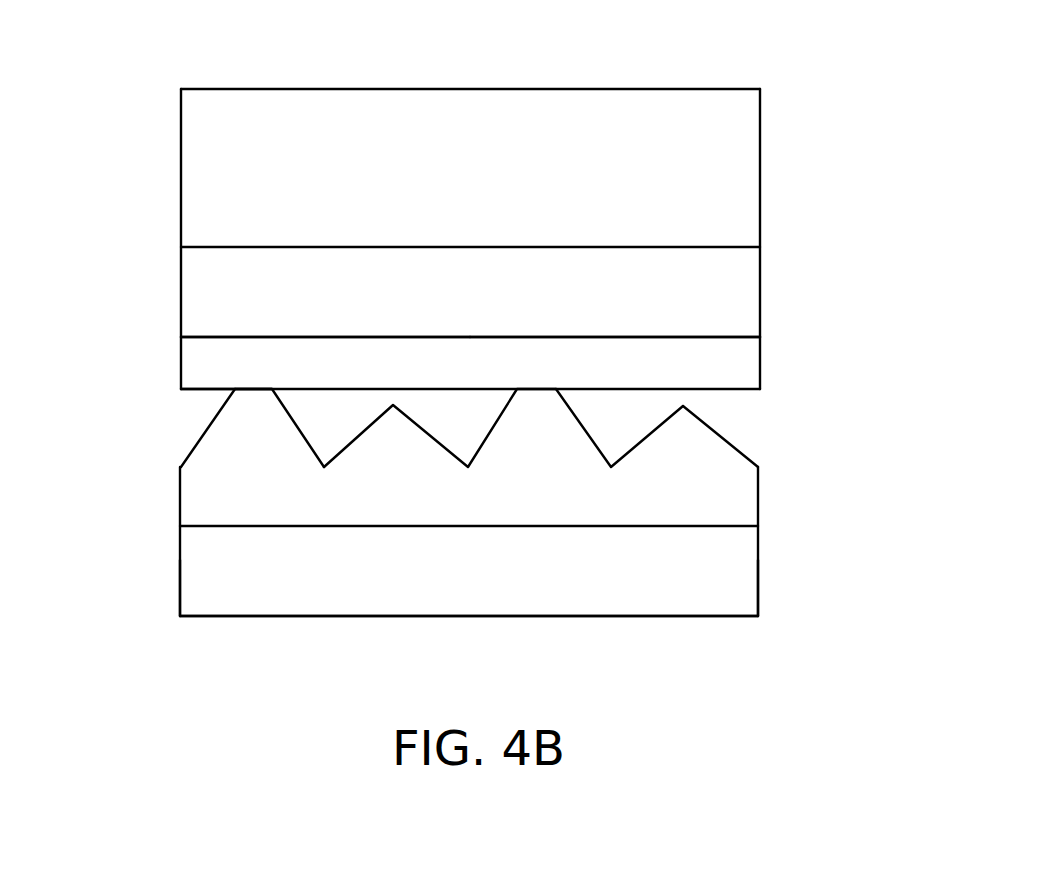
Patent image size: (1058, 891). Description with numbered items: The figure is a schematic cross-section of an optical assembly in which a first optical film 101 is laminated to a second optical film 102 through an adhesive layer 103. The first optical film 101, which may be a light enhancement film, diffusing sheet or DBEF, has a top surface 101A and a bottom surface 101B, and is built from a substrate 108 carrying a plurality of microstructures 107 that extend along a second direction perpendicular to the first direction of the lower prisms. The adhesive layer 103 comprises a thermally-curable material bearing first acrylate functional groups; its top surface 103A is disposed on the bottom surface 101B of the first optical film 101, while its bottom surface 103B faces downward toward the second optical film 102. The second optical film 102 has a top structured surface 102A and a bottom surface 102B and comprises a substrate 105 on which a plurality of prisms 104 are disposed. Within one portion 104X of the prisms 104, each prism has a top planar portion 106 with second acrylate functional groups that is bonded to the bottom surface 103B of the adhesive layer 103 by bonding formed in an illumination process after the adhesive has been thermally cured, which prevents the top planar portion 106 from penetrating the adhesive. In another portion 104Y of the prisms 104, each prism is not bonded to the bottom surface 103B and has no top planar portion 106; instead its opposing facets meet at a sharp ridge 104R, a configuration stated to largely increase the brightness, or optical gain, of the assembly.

The first optical film 101 is at (302, 192).
The top surface 101A is at (625, 89).
The bottom surface 101B is at (693, 337).
The second optical film 102 is at (348, 572).
The top structured surface 102A is at (198, 443).
The bottom surface 102B is at (590, 618).
The adhesive layer 103 is at (722, 368).
The top surface 103A is at (598, 337).
The bottom surface 103B is at (727, 390).
The prisms 104 is at (412, 453).
The ridge 104R is at (683, 406).
The portion of the prisms 104X is at (250, 435).
The another portion of the prisms 104Y is at (686, 423).
The substrate 105 is at (212, 581).
The top planar portion 106 is at (257, 389).
The microstructures 107 is at (213, 145).
The substrate 108 is at (212, 312).